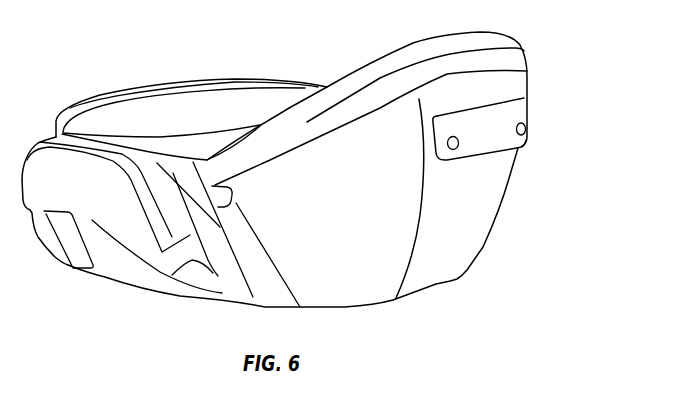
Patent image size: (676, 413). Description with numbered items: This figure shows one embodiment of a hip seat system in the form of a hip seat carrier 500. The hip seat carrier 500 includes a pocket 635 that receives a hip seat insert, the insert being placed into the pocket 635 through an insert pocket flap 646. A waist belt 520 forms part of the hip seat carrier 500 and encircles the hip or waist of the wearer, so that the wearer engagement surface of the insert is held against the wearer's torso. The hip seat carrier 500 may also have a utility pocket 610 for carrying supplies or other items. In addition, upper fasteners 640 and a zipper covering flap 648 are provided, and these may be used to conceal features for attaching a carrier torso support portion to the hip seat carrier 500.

The hip seat carrier 500 is at (238, 45).
The waist belt 520 is at (140, 88).
The insert pocket flap 646 is at (439, 67).
The upper fasteners 640 is at (526, 130).
The zipper covering flap 648 is at (493, 137).
The pocket 635 is at (337, 262).
The utility pocket 610 is at (118, 263).